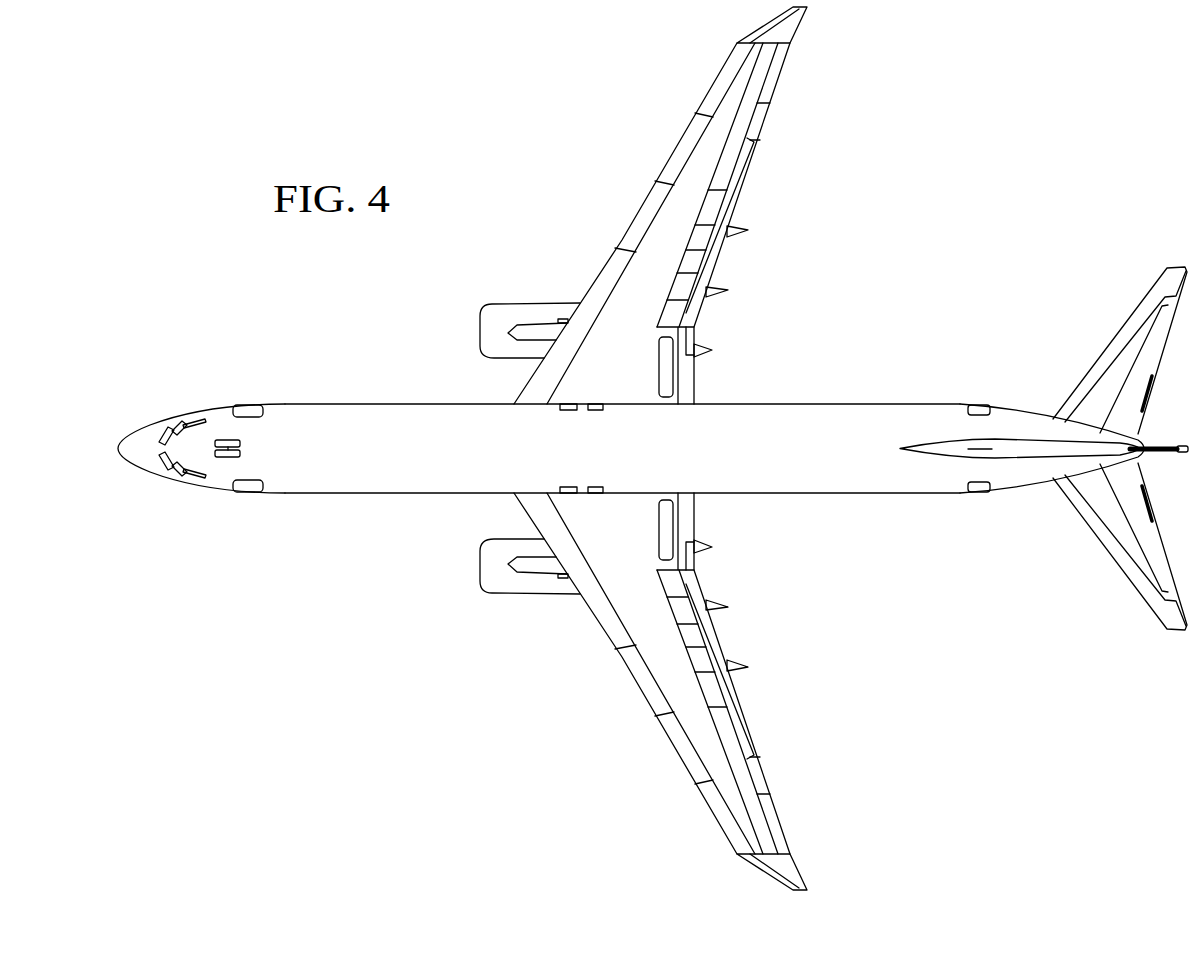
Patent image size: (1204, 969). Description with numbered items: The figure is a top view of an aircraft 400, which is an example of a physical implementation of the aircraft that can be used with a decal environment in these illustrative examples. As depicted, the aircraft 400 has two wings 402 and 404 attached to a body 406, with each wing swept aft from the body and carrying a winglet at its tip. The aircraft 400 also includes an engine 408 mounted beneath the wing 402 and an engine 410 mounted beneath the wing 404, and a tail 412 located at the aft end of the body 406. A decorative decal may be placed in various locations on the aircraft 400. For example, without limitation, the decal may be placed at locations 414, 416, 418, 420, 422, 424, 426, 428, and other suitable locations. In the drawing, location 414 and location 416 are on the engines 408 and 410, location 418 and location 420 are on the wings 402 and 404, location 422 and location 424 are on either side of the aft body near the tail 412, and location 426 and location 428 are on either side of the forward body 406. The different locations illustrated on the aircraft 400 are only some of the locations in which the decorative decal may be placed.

The aircraft 400 is at (1058, 152).
The wing 402 is at (712, 215).
The wing 404 is at (712, 682).
The body 406 is at (272, 410).
The engine 408 is at (479, 332).
The engine 410 is at (479, 565).
The tail 412 is at (1129, 345).
The location 414 is at (513, 302).
The location 416 is at (513, 595).
The location 418 is at (663, 256).
The location 420 is at (663, 641).
The location 422 is at (1032, 420).
The location 424 is at (1032, 477).
The location 426 is at (350, 484).
The location 428 is at (350, 412).